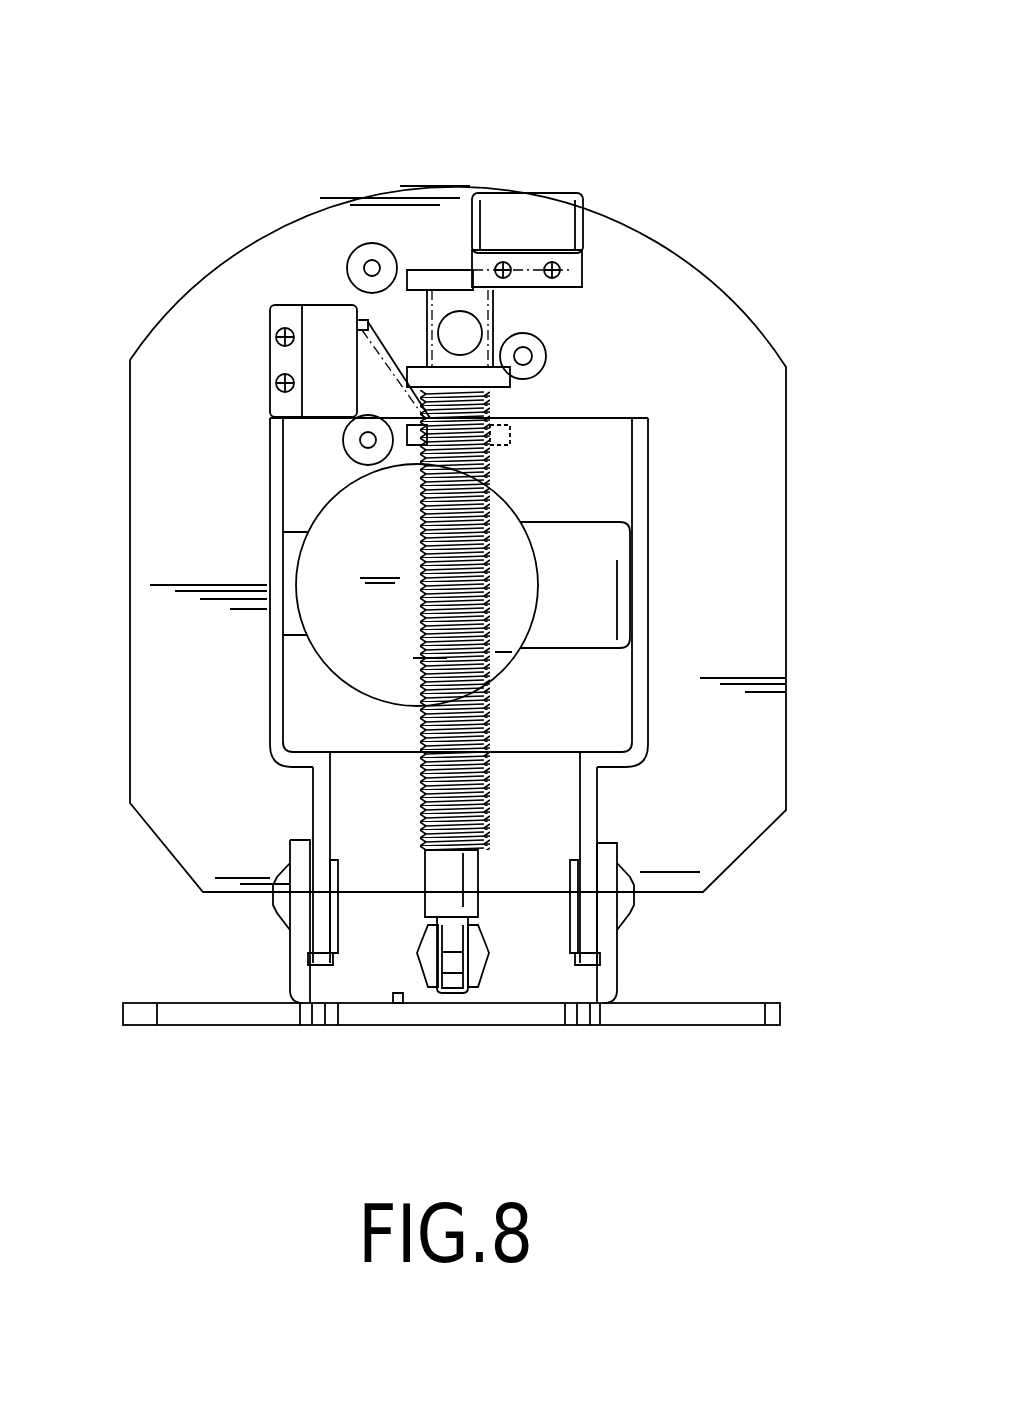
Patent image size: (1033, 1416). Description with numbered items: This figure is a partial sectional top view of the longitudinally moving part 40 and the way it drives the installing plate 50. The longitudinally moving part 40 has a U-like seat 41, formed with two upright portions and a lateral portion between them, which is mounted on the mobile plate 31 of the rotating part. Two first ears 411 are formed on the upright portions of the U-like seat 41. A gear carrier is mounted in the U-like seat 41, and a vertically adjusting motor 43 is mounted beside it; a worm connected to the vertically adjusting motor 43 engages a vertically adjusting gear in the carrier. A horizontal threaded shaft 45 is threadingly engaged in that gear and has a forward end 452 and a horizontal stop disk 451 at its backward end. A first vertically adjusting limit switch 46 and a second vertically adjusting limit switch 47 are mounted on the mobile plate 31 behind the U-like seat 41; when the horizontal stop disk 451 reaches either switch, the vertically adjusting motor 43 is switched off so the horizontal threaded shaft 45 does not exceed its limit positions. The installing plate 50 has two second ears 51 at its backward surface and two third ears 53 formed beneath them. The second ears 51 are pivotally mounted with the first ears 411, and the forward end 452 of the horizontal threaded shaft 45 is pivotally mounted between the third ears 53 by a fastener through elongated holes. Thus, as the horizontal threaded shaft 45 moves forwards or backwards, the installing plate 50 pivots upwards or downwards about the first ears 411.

The mobile plate 31 is at (755, 748).
The longitudinally moving part 40 is at (600, 118).
The U-like seat 41 is at (503, 691).
The first ears 411 is at (593, 807).
The vertically adjusting motor 43 is at (330, 645).
The horizontal threaded shaft 45 is at (568, 759).
The horizontal stop disk 451 is at (436, 270).
The forward end 452 is at (452, 938).
The first vertically adjusting limit switch 46 is at (467, 307).
The second vertically adjusting limit switch 47 is at (317, 325).
The installing plate 50 is at (706, 1018).
The second ears 51 is at (607, 973).
The third ears 53 is at (427, 993).